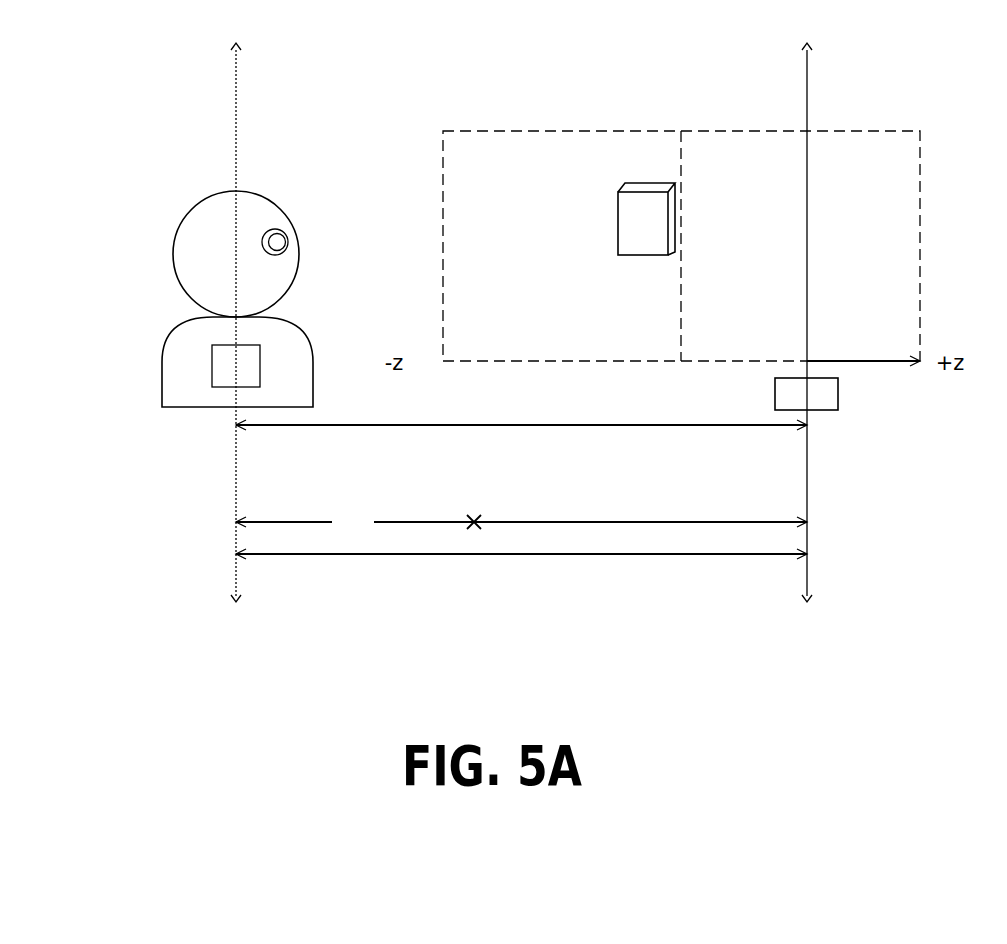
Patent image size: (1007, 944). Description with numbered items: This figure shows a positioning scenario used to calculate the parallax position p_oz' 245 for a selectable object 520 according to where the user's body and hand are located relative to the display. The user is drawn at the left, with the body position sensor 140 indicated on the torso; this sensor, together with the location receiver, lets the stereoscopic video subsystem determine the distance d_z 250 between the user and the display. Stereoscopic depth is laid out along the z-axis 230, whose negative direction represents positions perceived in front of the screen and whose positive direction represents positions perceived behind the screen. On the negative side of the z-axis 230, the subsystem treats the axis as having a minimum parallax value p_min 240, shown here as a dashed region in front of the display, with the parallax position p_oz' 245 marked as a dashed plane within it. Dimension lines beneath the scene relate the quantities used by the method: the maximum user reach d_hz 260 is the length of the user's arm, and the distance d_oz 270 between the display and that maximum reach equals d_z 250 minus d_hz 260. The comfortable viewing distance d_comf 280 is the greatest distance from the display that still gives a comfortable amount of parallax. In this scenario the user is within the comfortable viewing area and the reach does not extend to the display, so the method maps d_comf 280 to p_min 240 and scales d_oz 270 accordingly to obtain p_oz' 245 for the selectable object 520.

The body position sensor 140 is at (237, 299).
The z-axis 230 is at (903, 364).
The minimum parallax value p_min 240 is at (444, 347).
The parallax position p_oz' 245 is at (682, 290).
The distance d_z 250 is at (521, 553).
The maximum user reach d_hz 260 is at (358, 522).
The distance d_oz 270 is at (640, 521).
The comfortable viewing distance d_comf 280 is at (521, 426).
The selectable object 520 is at (651, 174).